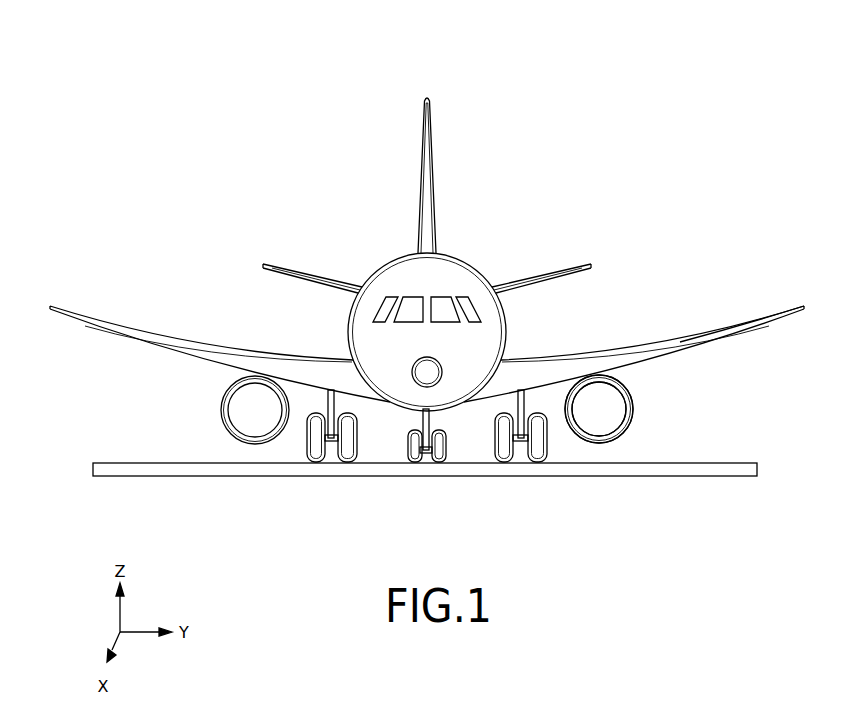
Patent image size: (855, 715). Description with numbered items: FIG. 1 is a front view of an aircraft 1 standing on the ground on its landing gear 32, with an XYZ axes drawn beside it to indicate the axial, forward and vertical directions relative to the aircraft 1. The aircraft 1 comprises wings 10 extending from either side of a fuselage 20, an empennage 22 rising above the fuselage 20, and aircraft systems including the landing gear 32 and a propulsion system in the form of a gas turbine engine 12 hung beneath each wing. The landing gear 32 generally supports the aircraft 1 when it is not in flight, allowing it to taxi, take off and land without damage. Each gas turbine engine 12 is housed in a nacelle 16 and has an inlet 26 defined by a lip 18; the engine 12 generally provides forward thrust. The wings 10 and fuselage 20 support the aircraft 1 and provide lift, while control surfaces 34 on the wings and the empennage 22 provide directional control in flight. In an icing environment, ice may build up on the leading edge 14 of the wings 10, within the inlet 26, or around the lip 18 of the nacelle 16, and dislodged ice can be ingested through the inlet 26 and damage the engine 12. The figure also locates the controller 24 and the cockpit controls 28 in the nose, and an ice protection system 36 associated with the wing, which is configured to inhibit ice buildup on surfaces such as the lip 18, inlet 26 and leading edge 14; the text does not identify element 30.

The aircraft 1 is at (427, 244).
The wings 10 is at (634, 341).
The gas turbine engine 12 is at (599, 414).
The leading edge 14 is at (642, 357).
The nacelle 16 is at (623, 386).
The lip 18 is at (632, 412).
The fuselage 20 is at (503, 307).
The empennage 22 is at (536, 268).
The controller 24 is at (390, 368).
The inlet 26 is at (608, 422).
The cockpit controls 28 is at (385, 308).
The engine pylon 30 is at (580, 383).
The landing gear 32 is at (406, 423).
The control surfaces 34 is at (726, 332).
The ice protection system 36 is at (231, 361).